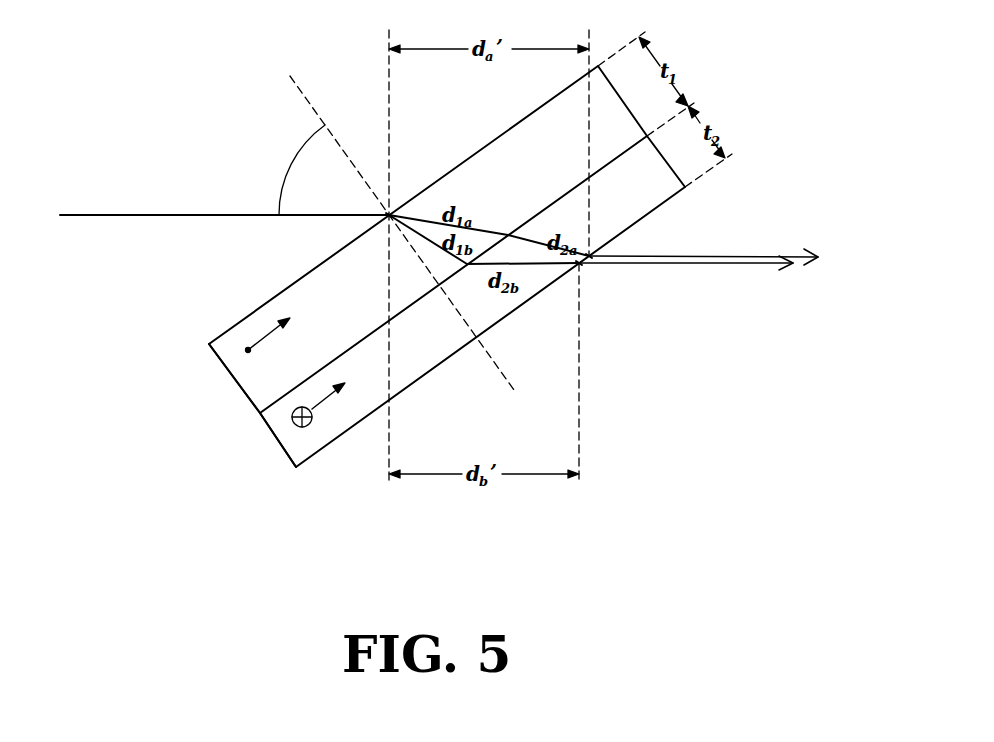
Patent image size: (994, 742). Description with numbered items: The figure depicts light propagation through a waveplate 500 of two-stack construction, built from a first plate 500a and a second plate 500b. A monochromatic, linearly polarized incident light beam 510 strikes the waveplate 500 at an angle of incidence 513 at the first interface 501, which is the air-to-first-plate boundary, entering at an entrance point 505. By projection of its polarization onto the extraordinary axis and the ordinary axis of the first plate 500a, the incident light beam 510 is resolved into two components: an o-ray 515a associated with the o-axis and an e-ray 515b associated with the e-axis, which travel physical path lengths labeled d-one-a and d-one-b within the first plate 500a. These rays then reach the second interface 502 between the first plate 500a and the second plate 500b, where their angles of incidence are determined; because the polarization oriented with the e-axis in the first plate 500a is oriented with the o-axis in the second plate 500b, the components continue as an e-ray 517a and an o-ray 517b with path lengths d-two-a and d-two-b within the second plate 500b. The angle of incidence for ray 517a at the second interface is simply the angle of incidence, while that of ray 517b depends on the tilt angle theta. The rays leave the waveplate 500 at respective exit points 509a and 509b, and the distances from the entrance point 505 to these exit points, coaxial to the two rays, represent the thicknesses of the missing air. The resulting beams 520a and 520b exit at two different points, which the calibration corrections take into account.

The waveplate 500 is at (402, 274).
The first plate 500a is at (237, 382).
The second plate 500b is at (275, 436).
The first interface 501 is at (322, 263).
The second interface 502 is at (420, 298).
The entrance point 505 is at (389, 215).
The exit point 509a is at (594, 254).
The exit point 509b is at (581, 266).
The incident light beam 510 is at (100, 215).
The angle of incidence 513 is at (288, 170).
The o-ray 515a is at (472, 226).
The e-ray 515b is at (405, 223).
The e-ray 517a is at (532, 239).
The o-ray 517b is at (540, 264).
The exiting beam 520a is at (745, 255).
The exiting beam 520b is at (725, 265).